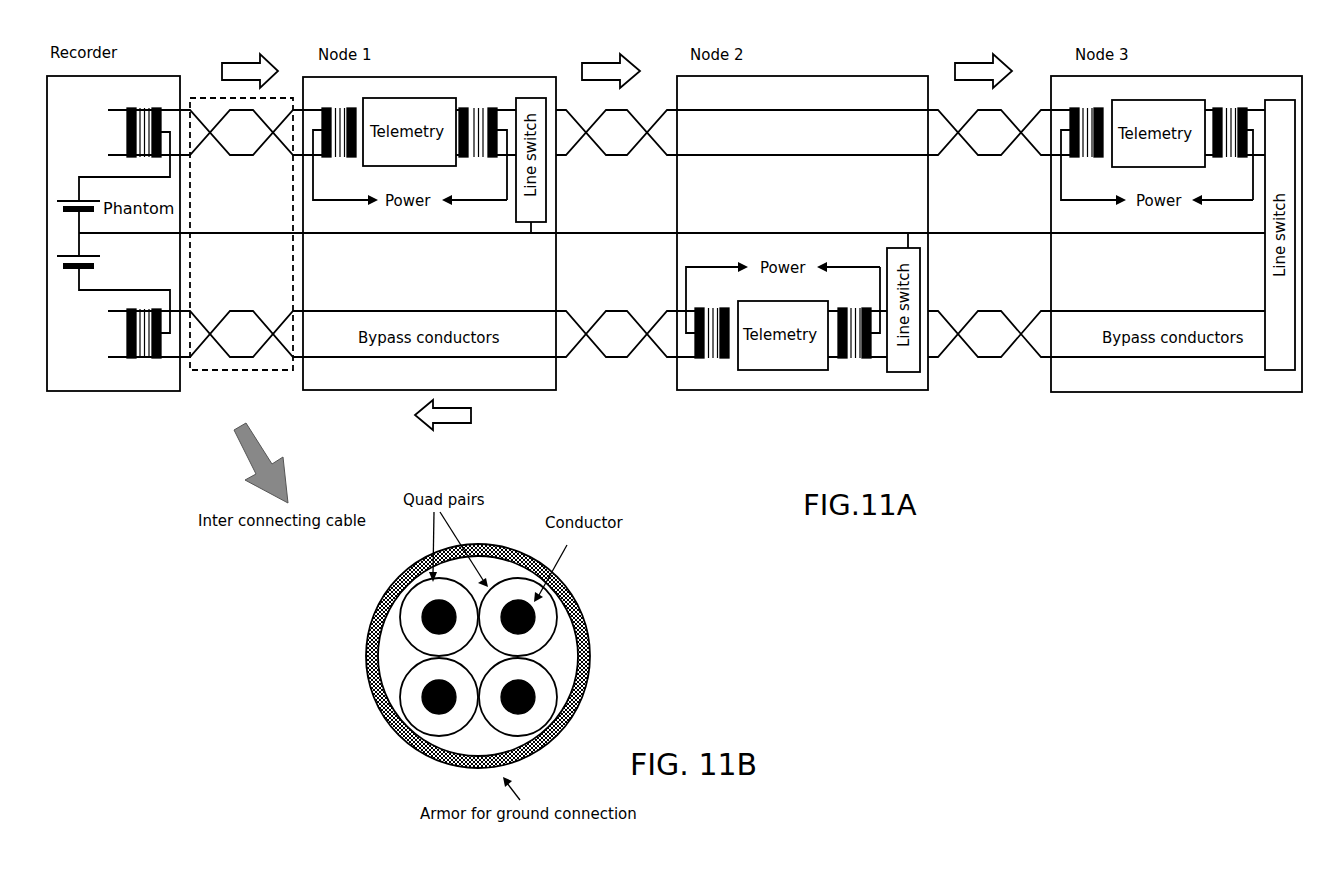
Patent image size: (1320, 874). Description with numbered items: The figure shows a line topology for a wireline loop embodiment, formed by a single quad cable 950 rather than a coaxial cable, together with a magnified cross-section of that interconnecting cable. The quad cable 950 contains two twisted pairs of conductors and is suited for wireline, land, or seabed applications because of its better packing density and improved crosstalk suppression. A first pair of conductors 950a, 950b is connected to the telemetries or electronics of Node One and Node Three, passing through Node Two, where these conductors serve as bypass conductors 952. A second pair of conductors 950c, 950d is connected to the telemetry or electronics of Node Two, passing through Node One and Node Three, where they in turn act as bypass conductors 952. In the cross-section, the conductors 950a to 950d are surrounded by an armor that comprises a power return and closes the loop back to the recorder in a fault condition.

In FIG. 11A, the quad cable 950 is at (632, 376).
In FIG. 11B, the quad cable 950 is at (610, 622).
In FIG. 11A, the first pair conductor 950a is at (273, 110).
In FIG. 11B, the first pair conductor 950a is at (422, 610).
In FIG. 11A, the first pair conductor 950b is at (282, 153).
In FIG. 11B, the first pair conductor 950b is at (530, 710).
In FIG. 11A, the second pair conductor 950c is at (282, 311).
In FIG. 11B, the second pair conductor 950c is at (533, 625).
In FIG. 11A, the second pair conductor 950d is at (263, 347).
In FIG. 11B, the second pair conductor 950d is at (423, 705).
In FIG. 11A, the bypass conductors 952 is at (807, 110).